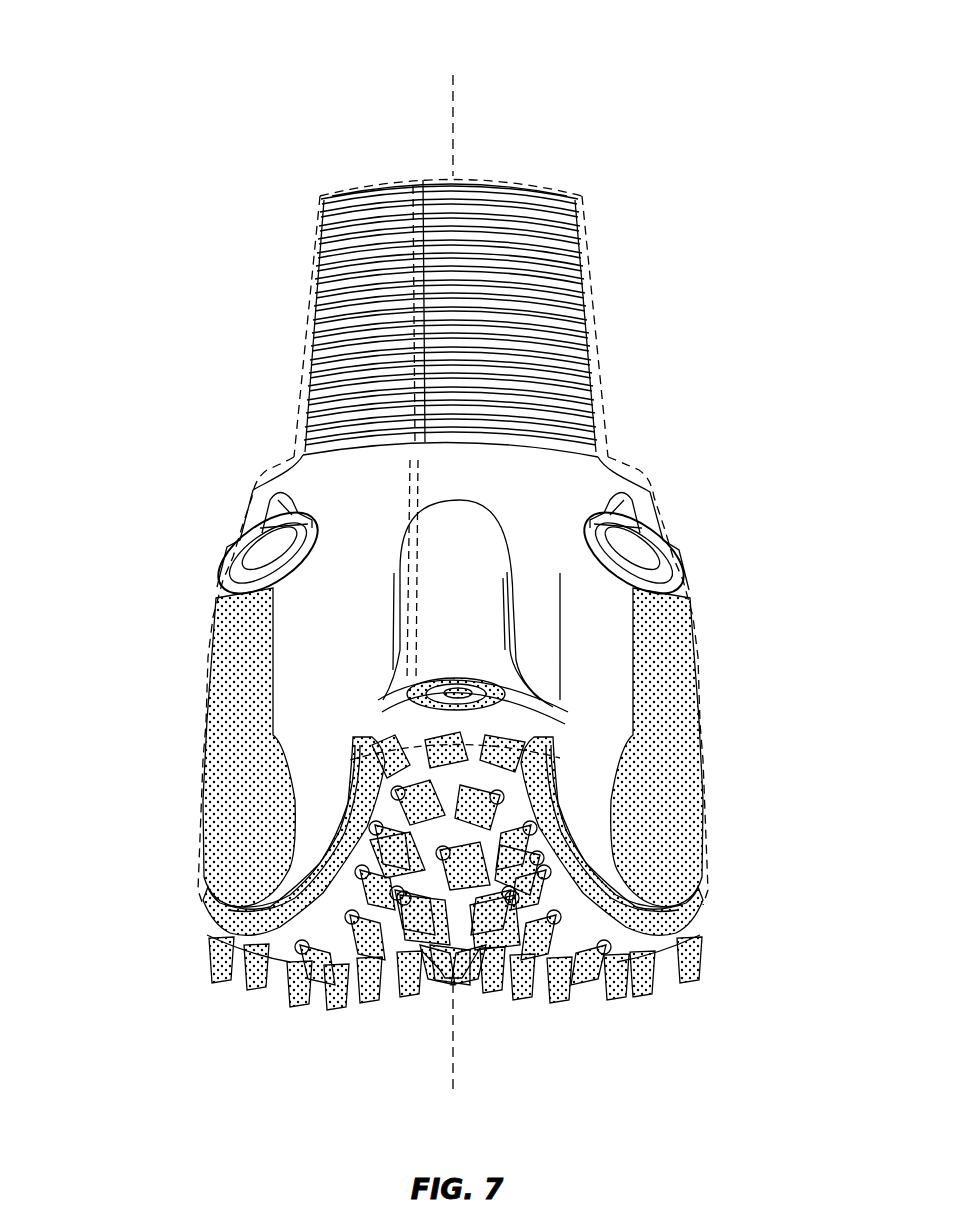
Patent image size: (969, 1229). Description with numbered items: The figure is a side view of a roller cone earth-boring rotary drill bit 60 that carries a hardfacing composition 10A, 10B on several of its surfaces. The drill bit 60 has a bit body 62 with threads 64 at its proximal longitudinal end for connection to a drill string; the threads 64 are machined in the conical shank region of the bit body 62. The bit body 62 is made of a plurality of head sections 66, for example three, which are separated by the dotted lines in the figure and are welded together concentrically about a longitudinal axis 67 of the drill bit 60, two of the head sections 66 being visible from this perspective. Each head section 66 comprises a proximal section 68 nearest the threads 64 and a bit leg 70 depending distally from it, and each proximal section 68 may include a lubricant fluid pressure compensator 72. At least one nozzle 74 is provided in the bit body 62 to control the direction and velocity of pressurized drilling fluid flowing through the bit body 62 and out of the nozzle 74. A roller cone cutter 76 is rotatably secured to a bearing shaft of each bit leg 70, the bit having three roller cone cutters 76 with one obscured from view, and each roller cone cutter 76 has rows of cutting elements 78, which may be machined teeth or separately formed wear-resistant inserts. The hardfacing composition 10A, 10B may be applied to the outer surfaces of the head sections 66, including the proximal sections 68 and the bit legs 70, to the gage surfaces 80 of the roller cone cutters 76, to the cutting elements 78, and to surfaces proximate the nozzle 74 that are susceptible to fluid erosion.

The roller cone drill bit 60 is at (262, 150).
The bit body 62 is at (636, 445).
The threads 64 is at (600, 280).
The head sections 66 is at (252, 505).
The longitudinal axis 67 is at (458, 97).
The proximal section 68 is at (313, 595).
The bit leg 70 is at (184, 858).
The lubricant fluid pressure compensator 72 is at (265, 553).
The nozzle 74 is at (545, 707).
The roller cone cutter 76 is at (290, 1020).
The cutting elements 78 is at (372, 1003).
The gage surfaces 80 is at (190, 905).
The hardfacing composition 10A is at (392, 700).
The hardfacing composition 10B is at (451, 851).